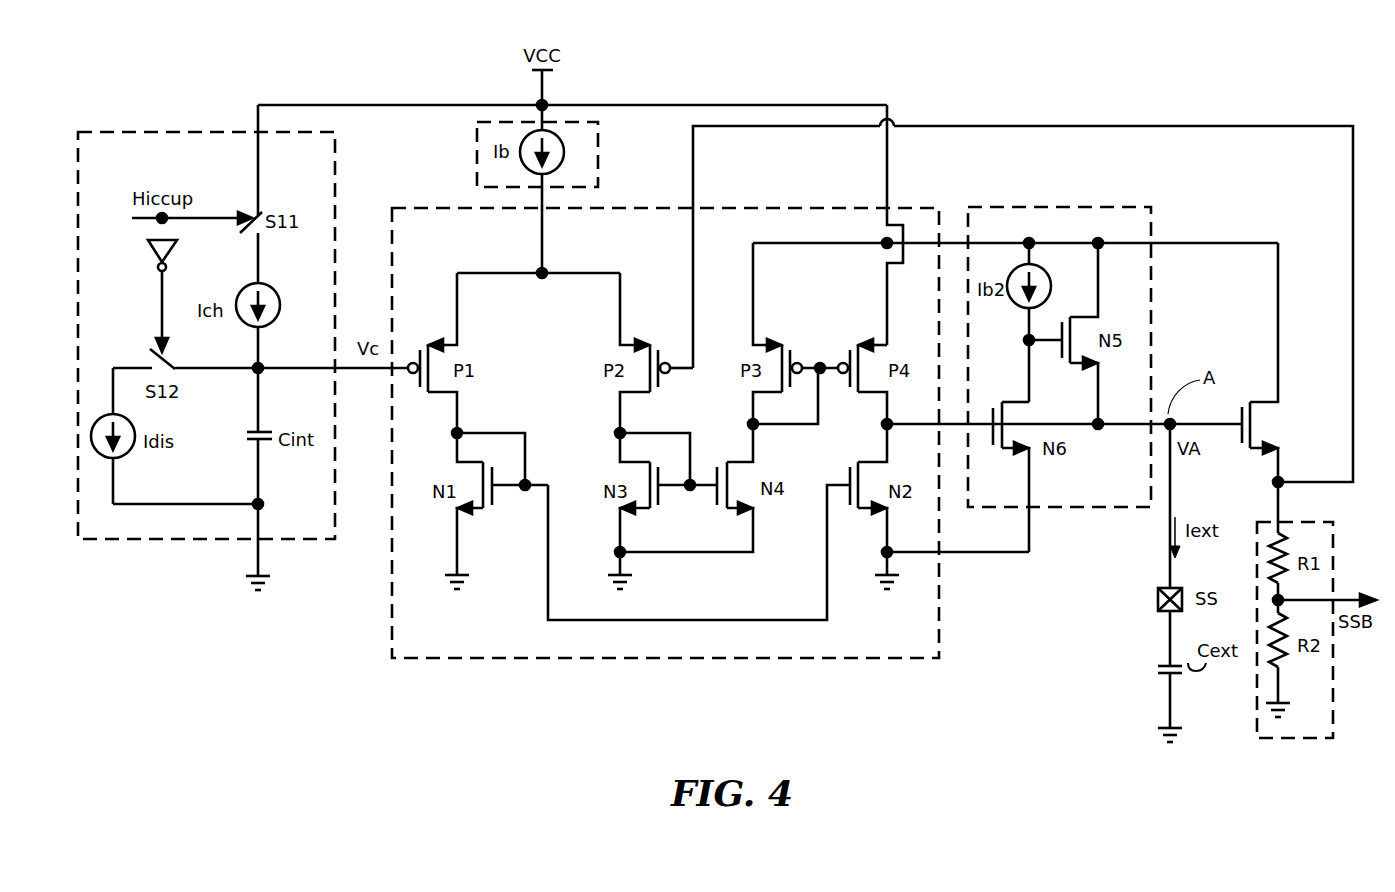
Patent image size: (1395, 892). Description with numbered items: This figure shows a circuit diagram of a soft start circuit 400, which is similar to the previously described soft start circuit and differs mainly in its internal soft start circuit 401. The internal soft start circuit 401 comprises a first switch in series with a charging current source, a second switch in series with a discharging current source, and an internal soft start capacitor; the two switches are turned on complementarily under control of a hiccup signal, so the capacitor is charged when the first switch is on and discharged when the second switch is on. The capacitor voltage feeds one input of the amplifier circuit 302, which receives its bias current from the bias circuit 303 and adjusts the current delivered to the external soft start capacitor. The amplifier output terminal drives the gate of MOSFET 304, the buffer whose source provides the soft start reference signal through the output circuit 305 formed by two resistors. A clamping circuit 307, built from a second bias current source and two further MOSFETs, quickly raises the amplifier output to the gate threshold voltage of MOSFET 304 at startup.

The soft start circuit 400 is at (1267, 83).
The internal soft start circuit 401 is at (335, 225).
The amplifier circuit 302 is at (905, 208).
The bias circuit 303 is at (598, 147).
The MOSFET 304 is at (1303, 422).
The output circuit 305 is at (1351, 555).
The clamping circuit 307 is at (1074, 198).